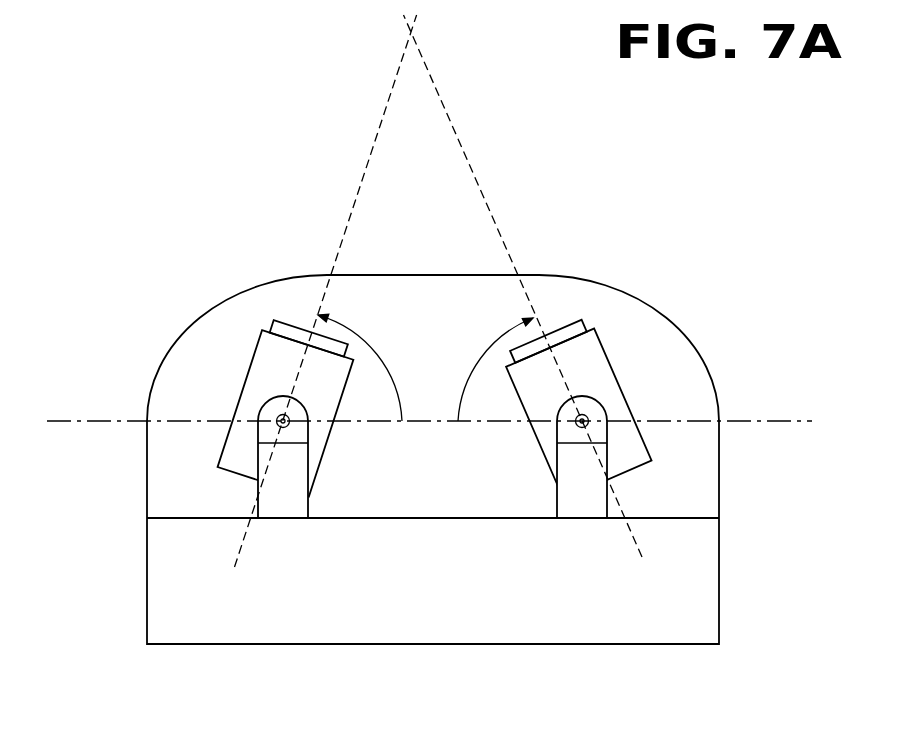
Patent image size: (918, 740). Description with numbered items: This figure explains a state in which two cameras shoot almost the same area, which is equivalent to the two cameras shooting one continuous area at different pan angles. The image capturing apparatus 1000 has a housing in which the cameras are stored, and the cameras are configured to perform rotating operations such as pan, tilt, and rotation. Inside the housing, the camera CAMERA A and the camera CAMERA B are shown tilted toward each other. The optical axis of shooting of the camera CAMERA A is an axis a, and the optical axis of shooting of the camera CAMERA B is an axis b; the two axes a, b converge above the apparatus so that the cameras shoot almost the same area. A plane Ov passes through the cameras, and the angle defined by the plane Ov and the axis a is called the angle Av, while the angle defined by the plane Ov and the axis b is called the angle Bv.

The image capturing apparatus 1000 is at (667, 644).
The camera A CAMERA A is at (250, 362).
The camera B CAMERA B is at (614, 362).
The axis a is at (319, 303).
The axis b is at (530, 300).
The plane Ov is at (428, 436).
The angle Av is at (363, 367).
The angle Bv is at (493, 369).